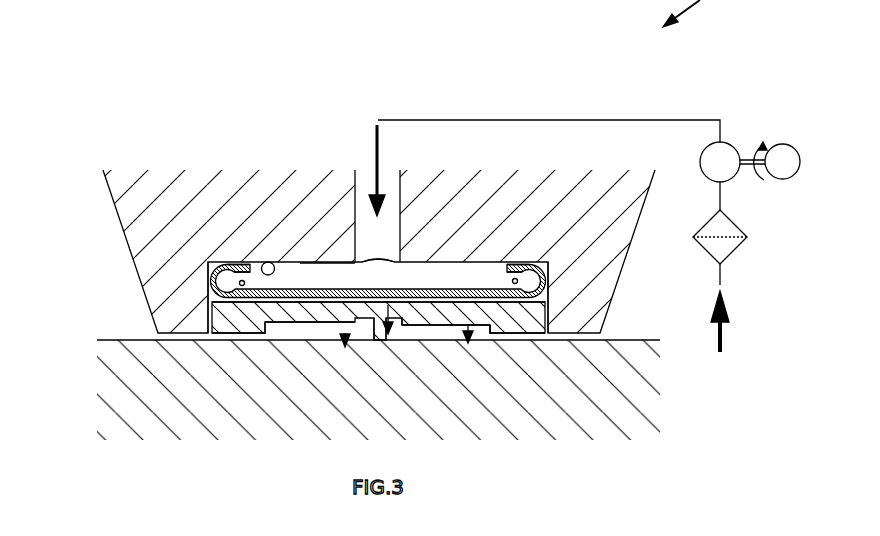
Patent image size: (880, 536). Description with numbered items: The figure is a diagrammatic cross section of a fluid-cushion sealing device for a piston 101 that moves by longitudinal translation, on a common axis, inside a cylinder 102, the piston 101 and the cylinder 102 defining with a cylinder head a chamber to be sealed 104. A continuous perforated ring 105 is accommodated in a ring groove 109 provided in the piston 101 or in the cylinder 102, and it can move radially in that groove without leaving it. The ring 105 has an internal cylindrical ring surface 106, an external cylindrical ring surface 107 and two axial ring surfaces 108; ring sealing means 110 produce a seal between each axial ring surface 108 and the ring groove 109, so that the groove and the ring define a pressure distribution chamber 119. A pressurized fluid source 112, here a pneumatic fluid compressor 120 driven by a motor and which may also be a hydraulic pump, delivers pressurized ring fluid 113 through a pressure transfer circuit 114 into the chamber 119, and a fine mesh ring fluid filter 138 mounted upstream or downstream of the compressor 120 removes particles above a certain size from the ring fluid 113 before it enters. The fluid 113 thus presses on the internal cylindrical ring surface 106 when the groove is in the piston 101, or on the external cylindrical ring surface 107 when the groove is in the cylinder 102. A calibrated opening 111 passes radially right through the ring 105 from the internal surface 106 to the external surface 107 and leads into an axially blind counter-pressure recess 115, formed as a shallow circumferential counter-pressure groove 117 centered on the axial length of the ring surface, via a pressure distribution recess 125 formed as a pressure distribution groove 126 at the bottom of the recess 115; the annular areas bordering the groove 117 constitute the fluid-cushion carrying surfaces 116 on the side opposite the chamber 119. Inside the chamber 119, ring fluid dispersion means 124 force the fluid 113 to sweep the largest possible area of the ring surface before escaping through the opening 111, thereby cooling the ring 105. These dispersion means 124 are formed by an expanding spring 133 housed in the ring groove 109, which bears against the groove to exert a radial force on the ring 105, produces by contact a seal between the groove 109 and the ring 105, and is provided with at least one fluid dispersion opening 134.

The piston 101 is at (147, 188).
The cylinder 102 is at (148, 392).
The chamber to be sealed 104 is at (100, 228).
The continuous perforated ring 105 is at (300, 318).
The internal cylindrical ring surface 106 is at (441, 290).
The external cylindrical ring surface 107 is at (345, 345).
The axial ring surfaces 108 is at (198, 320).
The ring groove 109 is at (284, 265).
The ring sealing means 110 is at (233, 250).
The calibrated opening 111 is at (390, 335).
The pressurized fluid source 112 is at (751, 108).
The pressurized ring fluid 113 is at (302, 262).
The pressure transfer circuit 114 is at (609, 120).
The counter-pressure recess 115 is at (513, 340).
The fluid-cushion carrying surface 116 is at (251, 338).
The counter-pressure groove 117 is at (327, 340).
The pressure distribution chamber 119 is at (327, 262).
The pneumatic fluid compressor 120 is at (733, 180).
The ring fluid dispersion means 124 is at (468, 275).
The pressure distribution recess 125 is at (389, 338).
The pressure distribution groove 126 is at (469, 345).
The expanding spring 133 is at (520, 262).
The fluid dispersion opening 134 is at (507, 282).
The ring fluid filter 138 is at (733, 253).